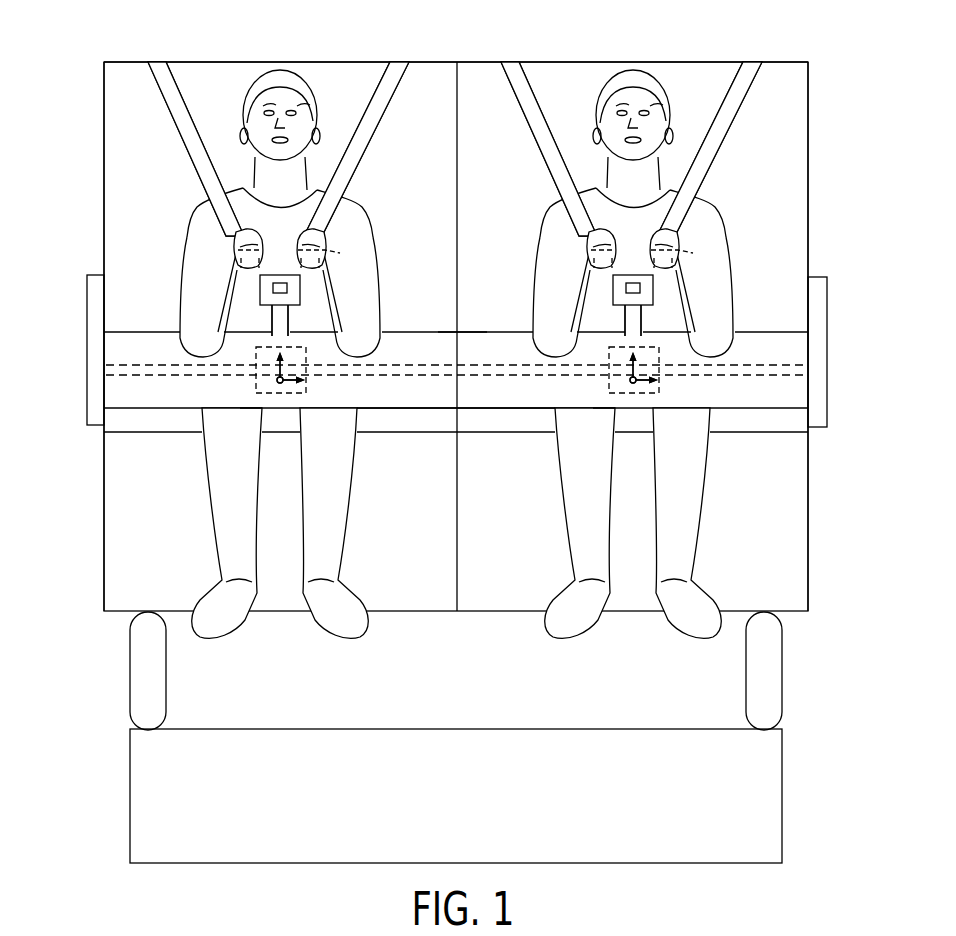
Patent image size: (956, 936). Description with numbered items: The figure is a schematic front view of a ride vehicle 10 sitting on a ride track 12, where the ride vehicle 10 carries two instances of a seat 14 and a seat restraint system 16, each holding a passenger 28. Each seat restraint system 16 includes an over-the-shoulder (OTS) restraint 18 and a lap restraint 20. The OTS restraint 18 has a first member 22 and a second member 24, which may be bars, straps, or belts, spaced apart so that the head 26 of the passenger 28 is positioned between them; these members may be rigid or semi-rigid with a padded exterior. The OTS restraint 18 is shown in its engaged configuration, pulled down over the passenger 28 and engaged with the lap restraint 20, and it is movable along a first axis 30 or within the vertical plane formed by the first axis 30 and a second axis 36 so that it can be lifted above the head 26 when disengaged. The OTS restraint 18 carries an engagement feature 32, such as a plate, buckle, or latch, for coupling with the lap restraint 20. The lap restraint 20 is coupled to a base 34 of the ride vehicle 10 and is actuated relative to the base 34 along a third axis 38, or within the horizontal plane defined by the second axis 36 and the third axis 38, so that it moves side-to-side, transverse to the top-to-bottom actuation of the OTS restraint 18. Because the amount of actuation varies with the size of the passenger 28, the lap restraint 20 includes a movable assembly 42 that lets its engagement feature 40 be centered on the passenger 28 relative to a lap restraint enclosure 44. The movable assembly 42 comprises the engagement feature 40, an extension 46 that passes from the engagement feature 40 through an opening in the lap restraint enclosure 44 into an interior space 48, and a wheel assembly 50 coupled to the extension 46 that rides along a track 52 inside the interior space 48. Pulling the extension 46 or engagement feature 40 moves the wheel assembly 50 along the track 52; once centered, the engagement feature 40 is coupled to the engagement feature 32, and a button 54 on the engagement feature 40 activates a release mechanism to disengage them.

The ride vehicle 10 is at (104, 100).
The ride track 12 is at (130, 798).
The seat 14 is at (128, 425).
The seat restraint system 16 is at (152, 150).
The over-the-shoulder (OTS) restraint 18 is at (187, 86).
The lap restraint 20 is at (396, 398).
The first member 22 is at (158, 72).
The second member 24 is at (400, 70).
The head 26 is at (317, 107).
The passenger 28 is at (368, 207).
The first axis 30 is at (277, 372).
The engagement feature 32 is at (340, 252).
The base 34 is at (85, 353).
The second axis 36 is at (278, 381).
The third axis 38 is at (289, 392).
The engagement feature 40 is at (300, 276).
The movable assembly 42 is at (265, 322).
The lap restraint enclosure 44 is at (487, 332).
The extension 46 is at (290, 314).
The interior space 48 is at (424, 393).
The wheel assembly 50 is at (256, 413).
The track 52 is at (113, 378).
The button 54 is at (272, 288).